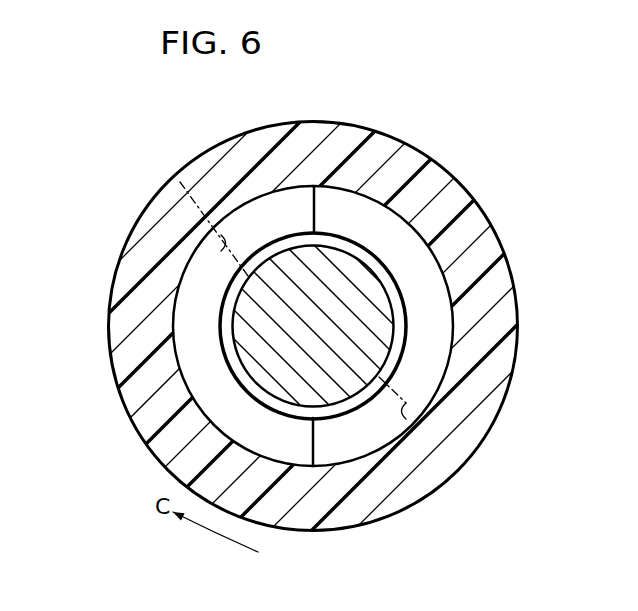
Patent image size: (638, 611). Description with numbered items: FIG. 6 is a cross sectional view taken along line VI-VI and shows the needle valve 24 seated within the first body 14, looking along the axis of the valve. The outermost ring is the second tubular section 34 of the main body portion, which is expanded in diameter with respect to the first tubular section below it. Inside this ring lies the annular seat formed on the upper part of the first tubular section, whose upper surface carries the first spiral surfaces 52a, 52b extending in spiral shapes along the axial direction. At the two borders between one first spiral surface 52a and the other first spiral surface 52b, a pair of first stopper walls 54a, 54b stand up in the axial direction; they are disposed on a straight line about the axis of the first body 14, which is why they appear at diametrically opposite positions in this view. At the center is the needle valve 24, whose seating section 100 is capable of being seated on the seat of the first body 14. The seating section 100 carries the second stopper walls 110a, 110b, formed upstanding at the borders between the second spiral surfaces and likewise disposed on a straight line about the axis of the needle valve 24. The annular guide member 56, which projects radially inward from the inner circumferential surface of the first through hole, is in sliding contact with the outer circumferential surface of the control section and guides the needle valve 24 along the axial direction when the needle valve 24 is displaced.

The first body 14 is at (498, 210).
The needle valve 24 is at (364, 271).
The second tubular section 34 is at (493, 365).
The first spiral surface 52a is at (253, 228).
The first spiral surface 52b is at (368, 437).
The first stopper wall 54a is at (314, 210).
The first stopper wall 54b is at (313, 449).
The guide member 56 is at (237, 366).
The seating section 100 is at (255, 303).
The second stopper wall 110a is at (180, 182).
The second stopper wall 110b is at (407, 422).